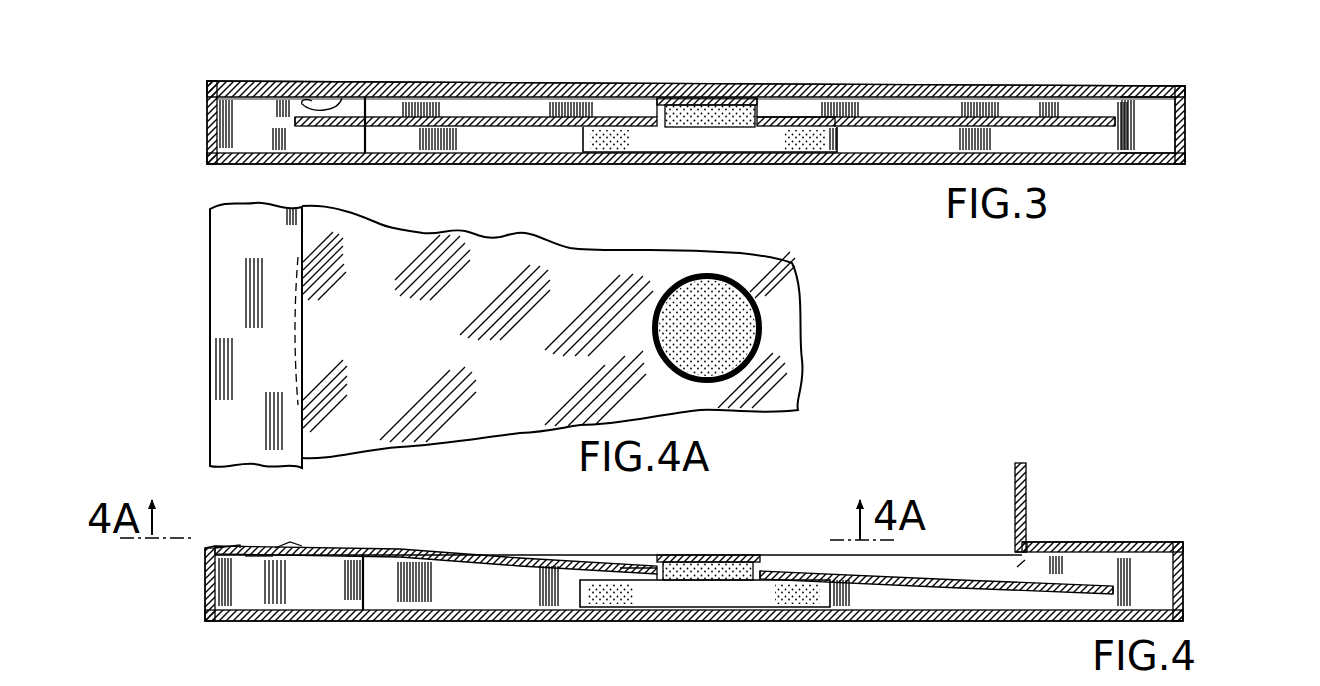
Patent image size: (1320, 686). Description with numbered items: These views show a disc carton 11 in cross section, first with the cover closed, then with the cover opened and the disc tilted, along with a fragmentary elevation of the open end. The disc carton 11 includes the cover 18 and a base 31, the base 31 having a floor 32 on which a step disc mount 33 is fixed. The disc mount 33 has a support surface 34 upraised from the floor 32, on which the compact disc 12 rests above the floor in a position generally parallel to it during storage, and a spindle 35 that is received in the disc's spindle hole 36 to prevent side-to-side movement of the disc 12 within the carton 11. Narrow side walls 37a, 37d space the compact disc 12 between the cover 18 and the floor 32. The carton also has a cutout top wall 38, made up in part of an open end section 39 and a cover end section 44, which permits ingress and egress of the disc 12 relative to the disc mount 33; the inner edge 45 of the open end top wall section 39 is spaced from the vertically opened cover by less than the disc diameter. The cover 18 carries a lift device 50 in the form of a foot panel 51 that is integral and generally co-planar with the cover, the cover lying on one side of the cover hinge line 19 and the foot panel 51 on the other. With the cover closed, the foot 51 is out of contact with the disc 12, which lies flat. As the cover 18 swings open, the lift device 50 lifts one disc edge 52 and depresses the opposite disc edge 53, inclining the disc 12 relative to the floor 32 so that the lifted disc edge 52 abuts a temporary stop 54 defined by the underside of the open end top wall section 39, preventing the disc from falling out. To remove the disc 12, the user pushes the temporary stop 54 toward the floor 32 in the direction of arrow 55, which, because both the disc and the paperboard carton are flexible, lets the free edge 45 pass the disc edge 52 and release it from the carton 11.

In FIG. 3, the disc carton 11 is at (1214, 120).
In FIG. 4, the disc carton 11 is at (1199, 533).
In FIG. 3, the compact disc 12 is at (918, 130).
In FIG. 4A, the compact disc 12 is at (503, 358).
In FIG. 4, the compact disc 12 is at (462, 553).
In FIG. 3, the cover 18 is at (565, 83).
In FIG. 4, the cover 18 is at (1018, 462).
In FIG. 4, the cover hinge line 19 is at (1030, 542).
In FIG. 3, the base 31 is at (204, 112).
In FIG. 3, the floor 32 is at (496, 153).
In FIG. 4, the floor 32 is at (478, 612).
In FIG. 3, the step disc mount 33 is at (722, 122).
In FIG. 4A, the step disc mount 33 is at (738, 339).
In FIG. 4, the step disc mount 33 is at (746, 556).
In FIG. 3, the support surface 34 is at (787, 117).
In FIG. 4, the support surface 34 is at (632, 566).
In FIG. 3, the spindle 35 is at (660, 99).
In FIG. 4A, the spindle 35 is at (720, 298).
In FIG. 4, the spindle 35 is at (703, 555).
In FIG. 3, the spindle hole 36 is at (638, 130).
In FIG. 4, the spindle hole 36 is at (776, 570).
In FIG. 3, the side wall 37a is at (206, 147).
In FIG. 4A, the side wall 37a is at (210, 368).
In FIG. 4, the side wall 37a is at (205, 594).
In FIG. 3, the side wall 37d is at (1186, 148).
In FIG. 4, the side wall 37d is at (1185, 577).
In FIG. 3, the top wall 38 is at (272, 95).
In FIG. 4A, the top wall 38 is at (224, 303).
In FIG. 4, the top wall 38 is at (205, 549).
In FIG. 4, the open end top wall section 39 is at (238, 545).
In FIG. 3, the cover end top wall section 44 is at (1150, 86).
In FIG. 4, the cover end top wall section 44 is at (1140, 542).
In FIG. 3, the inner edge 45 is at (342, 98).
In FIG. 4A, the inner edge 45 is at (303, 331).
In FIG. 4, the inner edge 45 is at (292, 546).
In FIG. 4, the lift device 50 is at (1000, 543).
In FIG. 4, the foot panel 51 is at (1017, 567).
In FIG. 3, the disc edge 52 is at (324, 128).
In FIG. 4A, the disc edge 52 is at (316, 310).
In FIG. 4, the disc edge 52 is at (322, 548).
In FIG. 3, the opposite disc edge 53 is at (1077, 115).
In FIG. 4, the opposite disc edge 53 is at (1118, 593).
In FIG. 4, the temporary stop 54 is at (273, 557).
In FIG. 4, the arrow 55 is at (282, 540).